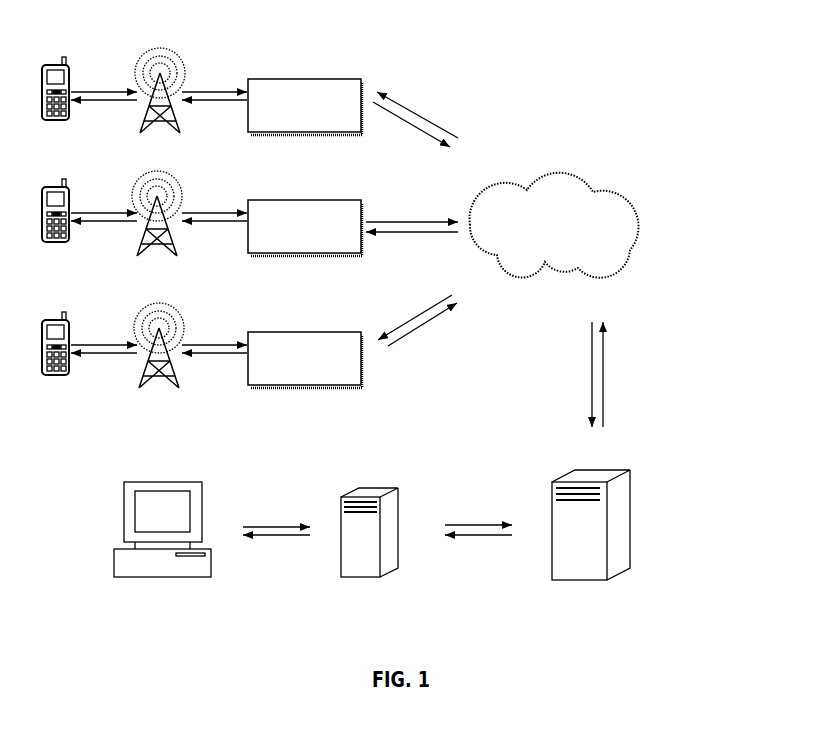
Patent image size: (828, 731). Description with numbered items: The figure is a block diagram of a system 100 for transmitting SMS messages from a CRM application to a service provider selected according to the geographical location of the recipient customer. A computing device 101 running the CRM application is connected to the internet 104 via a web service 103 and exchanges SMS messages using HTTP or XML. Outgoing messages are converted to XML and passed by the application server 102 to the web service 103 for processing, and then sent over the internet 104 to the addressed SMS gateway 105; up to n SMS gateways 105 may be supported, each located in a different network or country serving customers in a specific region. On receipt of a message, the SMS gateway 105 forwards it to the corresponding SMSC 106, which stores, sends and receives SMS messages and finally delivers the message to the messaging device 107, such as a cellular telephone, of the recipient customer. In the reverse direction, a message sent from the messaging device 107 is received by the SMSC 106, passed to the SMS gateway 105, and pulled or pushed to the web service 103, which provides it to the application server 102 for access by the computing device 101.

The system 100 is at (651, 88).
The computing device 101 is at (162, 482).
The application server 102 is at (370, 488).
The web service 103 is at (605, 470).
The internet 104 is at (558, 173).
The SMS gateway 105 is at (305, 79).
The SMSC 106 is at (158, 202).
The messaging device 107 is at (56, 195).